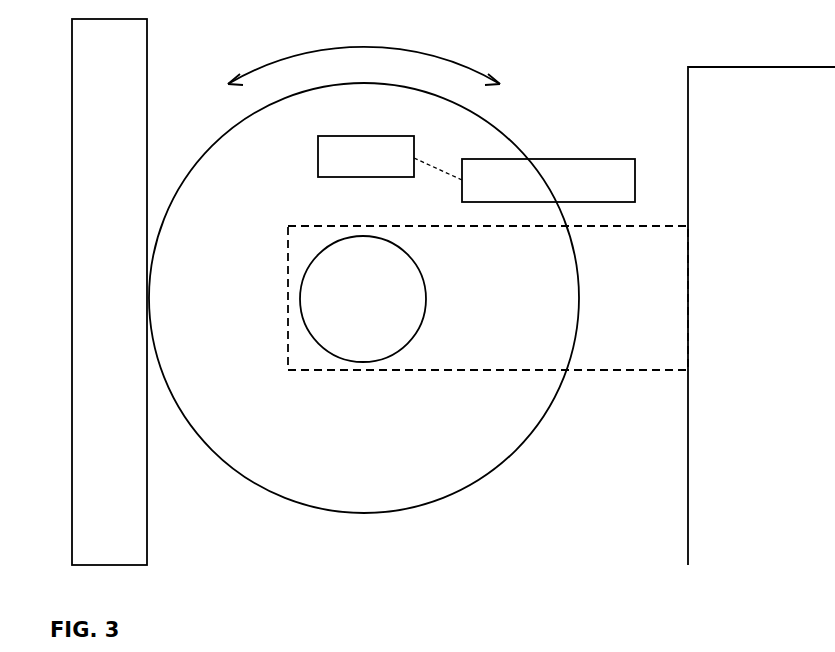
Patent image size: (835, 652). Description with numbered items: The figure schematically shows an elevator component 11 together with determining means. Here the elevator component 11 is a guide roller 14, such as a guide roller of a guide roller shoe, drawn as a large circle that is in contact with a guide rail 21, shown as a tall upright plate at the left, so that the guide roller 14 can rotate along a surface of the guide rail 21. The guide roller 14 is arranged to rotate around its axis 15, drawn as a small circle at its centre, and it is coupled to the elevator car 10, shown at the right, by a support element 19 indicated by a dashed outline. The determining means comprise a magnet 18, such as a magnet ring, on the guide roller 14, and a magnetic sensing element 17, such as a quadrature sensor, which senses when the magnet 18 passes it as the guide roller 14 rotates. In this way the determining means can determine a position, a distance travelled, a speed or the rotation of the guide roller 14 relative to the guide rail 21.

The elevator car 10 is at (762, 315).
The elevator component 11 is at (555, 83).
The guide roller 14 is at (288, 500).
The axis 15 is at (378, 311).
The magnetic sensing element 17 is at (562, 193).
The magnet 18 is at (381, 168).
The support element 19 is at (640, 370).
The guide rail 21 is at (87, 85).